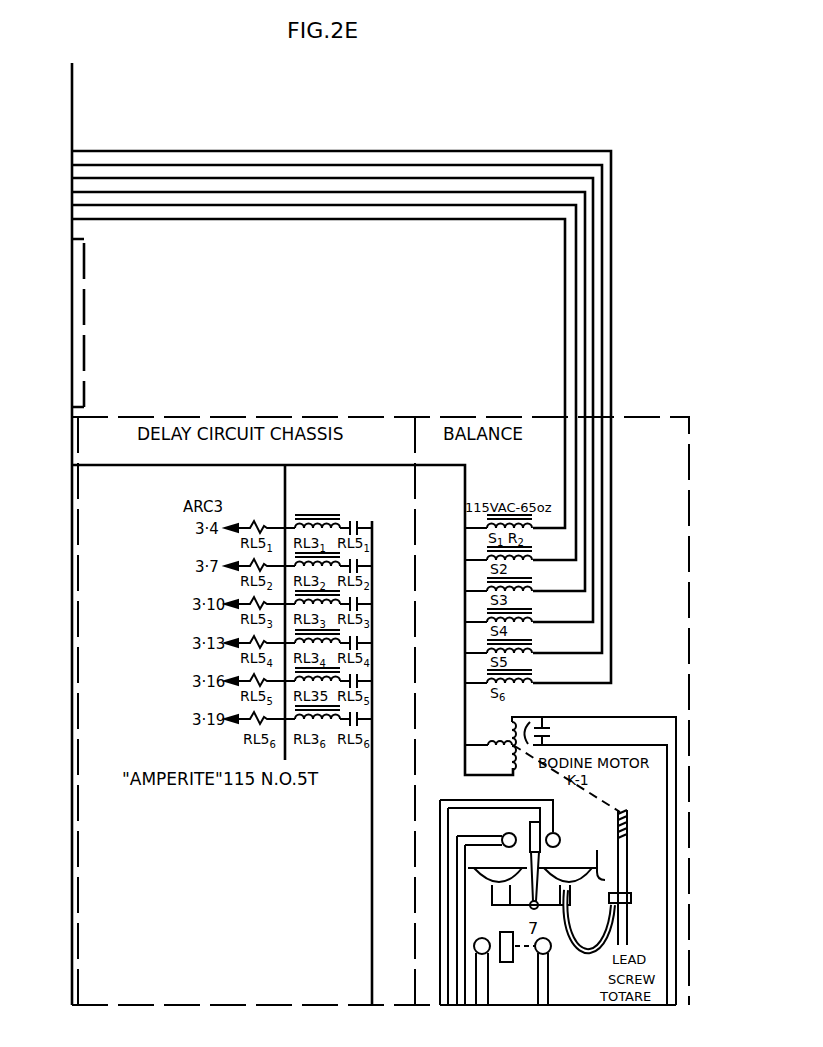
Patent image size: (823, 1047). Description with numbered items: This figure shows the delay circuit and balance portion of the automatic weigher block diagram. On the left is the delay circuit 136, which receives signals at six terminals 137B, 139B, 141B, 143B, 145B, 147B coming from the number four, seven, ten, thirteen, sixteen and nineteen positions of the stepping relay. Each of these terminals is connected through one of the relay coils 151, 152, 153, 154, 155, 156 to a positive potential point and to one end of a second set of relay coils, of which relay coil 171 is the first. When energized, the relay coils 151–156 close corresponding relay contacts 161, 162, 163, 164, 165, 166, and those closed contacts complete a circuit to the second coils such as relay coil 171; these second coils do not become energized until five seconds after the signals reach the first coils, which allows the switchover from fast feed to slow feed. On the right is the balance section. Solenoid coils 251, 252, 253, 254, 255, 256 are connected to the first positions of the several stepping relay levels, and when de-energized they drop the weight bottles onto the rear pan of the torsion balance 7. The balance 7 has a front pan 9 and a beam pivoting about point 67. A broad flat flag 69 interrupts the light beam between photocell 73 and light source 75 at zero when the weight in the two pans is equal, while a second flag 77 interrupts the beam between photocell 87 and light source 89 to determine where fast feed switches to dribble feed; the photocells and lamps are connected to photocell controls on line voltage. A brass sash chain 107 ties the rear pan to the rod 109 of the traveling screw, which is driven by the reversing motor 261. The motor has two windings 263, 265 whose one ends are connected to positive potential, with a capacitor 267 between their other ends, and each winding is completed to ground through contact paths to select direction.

The delay circuit 136 is at (316, 417).
The relay coil 151 is at (266, 520).
The relay coil 152 is at (250, 564).
The relay coil 153 is at (250, 602).
The relay coil 154 is at (250, 641).
The relay coil 155 is at (250, 679).
The relay coil 156 is at (250, 717).
The relay contact 161 is at (356, 527).
The relay contact 162 is at (358, 564).
The relay contact 163 is at (358, 602).
The relay contact 164 is at (358, 641).
The relay contact 165 is at (358, 679).
The relay contact 166 is at (358, 717).
The relay coil 171 is at (338, 515).
The terminal 137B is at (152, 529).
The terminal 139B is at (152, 567).
The terminal 141B is at (152, 605).
The terminal 143B is at (152, 644).
The terminal 145B is at (152, 682).
The terminal 147B is at (152, 720).
The coil 251 is at (504, 513).
The coil 252 is at (533, 550).
The coil 253 is at (533, 582).
The coil 254 is at (533, 613).
The coil 255 is at (533, 644).
The coil 256 is at (533, 675).
The reversing motor 261 is at (508, 725).
The winding 263 is at (540, 716).
The winding 265 is at (499, 744).
The capacitor 267 is at (552, 736).
The flag 69 is at (546, 797).
The photocell 73 is at (558, 832).
The light source 75 is at (505, 852).
The pivot point 67 is at (550, 862).
The front pan 9 is at (505, 877).
The balance 7 is at (605, 863).
The rod of the traveling screw 109 is at (619, 885).
The brass sash chain 107 is at (587, 943).
The photocell 87 is at (490, 957).
The second flag 77 is at (510, 962).
The light source 89 is at (548, 941).